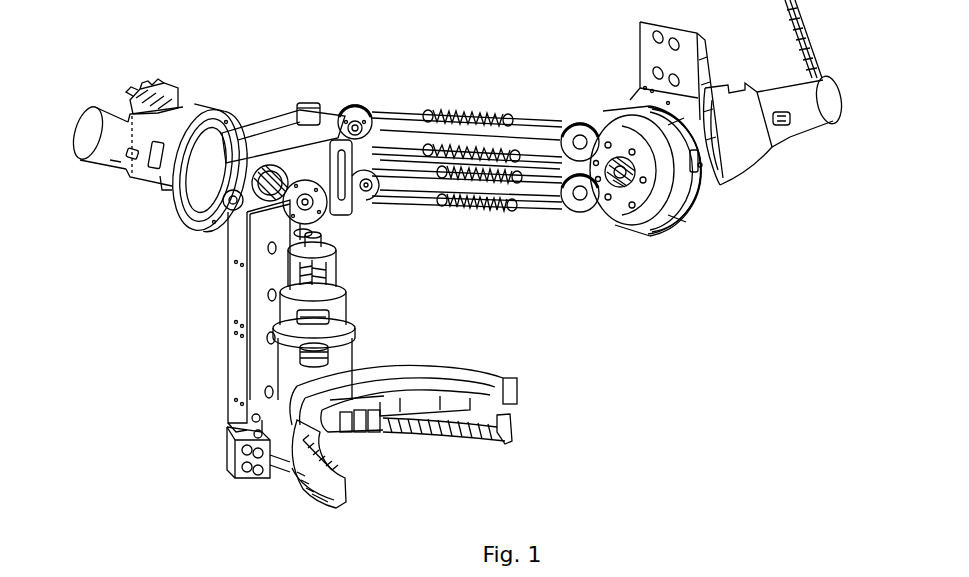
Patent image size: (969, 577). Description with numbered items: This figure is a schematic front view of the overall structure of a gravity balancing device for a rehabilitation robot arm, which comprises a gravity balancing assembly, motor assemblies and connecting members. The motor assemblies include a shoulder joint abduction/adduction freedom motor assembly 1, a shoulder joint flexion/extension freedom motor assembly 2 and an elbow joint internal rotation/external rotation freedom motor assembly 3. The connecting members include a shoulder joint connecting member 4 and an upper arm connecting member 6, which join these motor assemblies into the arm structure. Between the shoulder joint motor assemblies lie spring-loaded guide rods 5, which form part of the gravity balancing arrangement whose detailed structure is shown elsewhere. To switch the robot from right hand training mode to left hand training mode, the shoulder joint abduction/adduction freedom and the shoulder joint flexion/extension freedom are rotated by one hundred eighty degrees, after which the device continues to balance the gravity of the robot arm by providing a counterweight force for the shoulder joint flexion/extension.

The shoulder joint abduction/adduction freedom motor assembly 1 is at (717, 185).
The shoulder joint flexion/extension freedom motor assembly 2 is at (170, 177).
The elbow joint internal rotation/external rotation freedom motor assembly 3 is at (283, 380).
The shoulder joint connecting member 4 is at (643, 198).
The spring-loaded guide rods 5 is at (490, 203).
The upper arm connecting member 6 is at (233, 288).